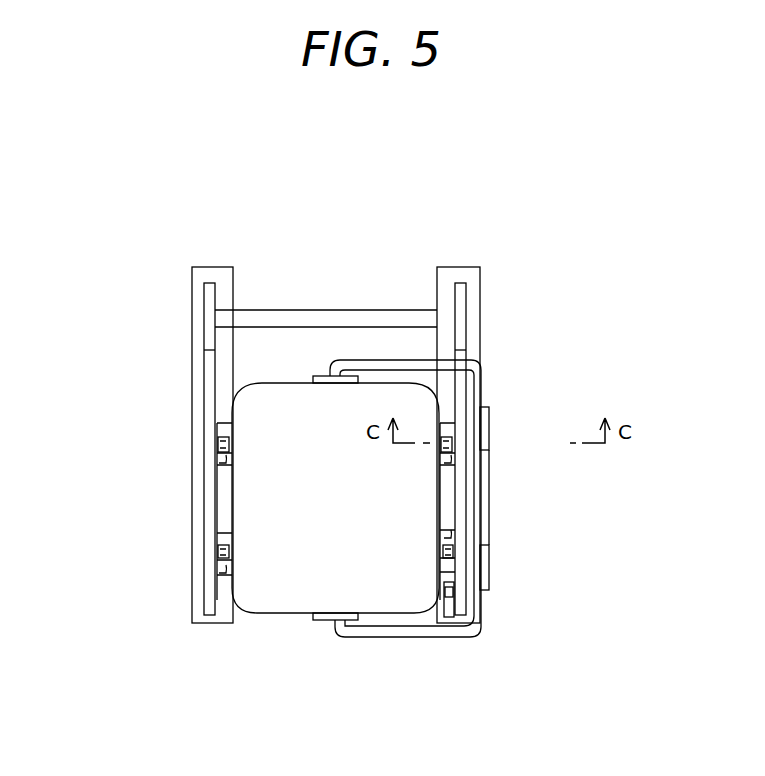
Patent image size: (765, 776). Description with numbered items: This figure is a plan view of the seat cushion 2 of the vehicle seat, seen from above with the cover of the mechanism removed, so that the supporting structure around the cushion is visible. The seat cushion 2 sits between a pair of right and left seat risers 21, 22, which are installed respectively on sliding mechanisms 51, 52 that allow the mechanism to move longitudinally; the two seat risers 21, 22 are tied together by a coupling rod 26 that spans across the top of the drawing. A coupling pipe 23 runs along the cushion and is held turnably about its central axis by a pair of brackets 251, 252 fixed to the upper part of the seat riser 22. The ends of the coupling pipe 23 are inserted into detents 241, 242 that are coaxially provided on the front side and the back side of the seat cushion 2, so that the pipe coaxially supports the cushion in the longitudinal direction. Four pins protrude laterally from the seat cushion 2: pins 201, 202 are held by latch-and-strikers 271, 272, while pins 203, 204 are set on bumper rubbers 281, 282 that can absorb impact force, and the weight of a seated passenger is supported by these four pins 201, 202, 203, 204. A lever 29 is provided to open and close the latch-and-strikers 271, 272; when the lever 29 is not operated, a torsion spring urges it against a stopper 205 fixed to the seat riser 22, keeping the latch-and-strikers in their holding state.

The seat cushion 2 is at (278, 592).
The seat riser 21 is at (210, 373).
The seat riser 22 is at (467, 327).
The coupling pipe 23 is at (405, 638).
The coupling rod 26 is at (333, 310).
The lever 29 is at (448, 617).
The sliding mechanism 51 is at (192, 401).
The sliding mechanism 52 is at (480, 293).
The pin 201 is at (218, 553).
The pin 202 is at (448, 550).
The pin 203 is at (218, 445).
The pin 204 is at (452, 445).
The stopper 205 is at (453, 593).
The detent 241 is at (315, 622).
The detent 242 is at (322, 373).
The bracket 251 is at (489, 568).
The bracket 252 is at (489, 420).
The latch-and-striker 271 is at (222, 573).
The latch-and-striker 272 is at (447, 532).
The bumper rubber 281 is at (222, 465).
The bumper rubber 282 is at (452, 467).